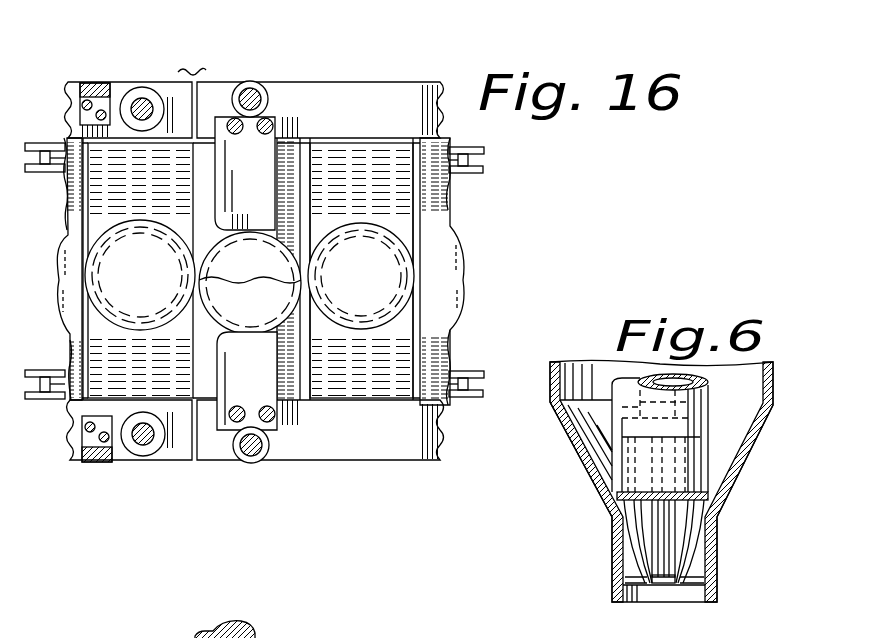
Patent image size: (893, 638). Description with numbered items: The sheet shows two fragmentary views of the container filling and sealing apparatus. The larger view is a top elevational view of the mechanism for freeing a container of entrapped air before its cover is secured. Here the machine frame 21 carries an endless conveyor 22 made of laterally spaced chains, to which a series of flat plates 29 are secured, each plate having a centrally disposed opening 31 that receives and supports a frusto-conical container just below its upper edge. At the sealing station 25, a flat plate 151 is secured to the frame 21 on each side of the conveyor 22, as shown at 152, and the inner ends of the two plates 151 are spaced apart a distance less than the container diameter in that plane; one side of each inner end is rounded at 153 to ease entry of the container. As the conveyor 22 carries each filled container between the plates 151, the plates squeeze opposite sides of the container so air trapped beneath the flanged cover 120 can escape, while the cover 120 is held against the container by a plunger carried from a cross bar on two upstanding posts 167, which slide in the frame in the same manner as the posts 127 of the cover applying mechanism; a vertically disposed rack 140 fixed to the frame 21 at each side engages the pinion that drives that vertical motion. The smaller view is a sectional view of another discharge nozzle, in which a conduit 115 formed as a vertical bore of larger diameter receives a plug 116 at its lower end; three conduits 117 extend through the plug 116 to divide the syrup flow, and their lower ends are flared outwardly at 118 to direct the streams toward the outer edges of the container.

In FIG. 16, the frame 21 is at (126, 82).
In FIG. 16, the endless conveyor 22 is at (43, 176).
In FIG. 16, the sealing station 25 is at (276, 80).
In FIG. 16, the flat plate 29 is at (101, 348).
In FIG. 16, the opening 31 is at (318, 267).
In FIG. 16, the cover 120 is at (164, 222).
In FIG. 16, the post 127 is at (143, 104).
In FIG. 16, the rack 140 is at (93, 82).
In FIG. 16, the flat plate 151 is at (272, 199).
In FIG. 16, the plate securing location 152 is at (230, 118).
In FIG. 16, the rounded inner end 153 is at (213, 228).
In FIG. 16, the upstanding post 167 is at (251, 98).
In FIG. 6, the conduit 115 is at (700, 397).
In FIG. 6, the plug 116 is at (697, 458).
In FIG. 6, the conduit 117 is at (640, 533).
In FIG. 6, the flared lower end 118 is at (633, 575).